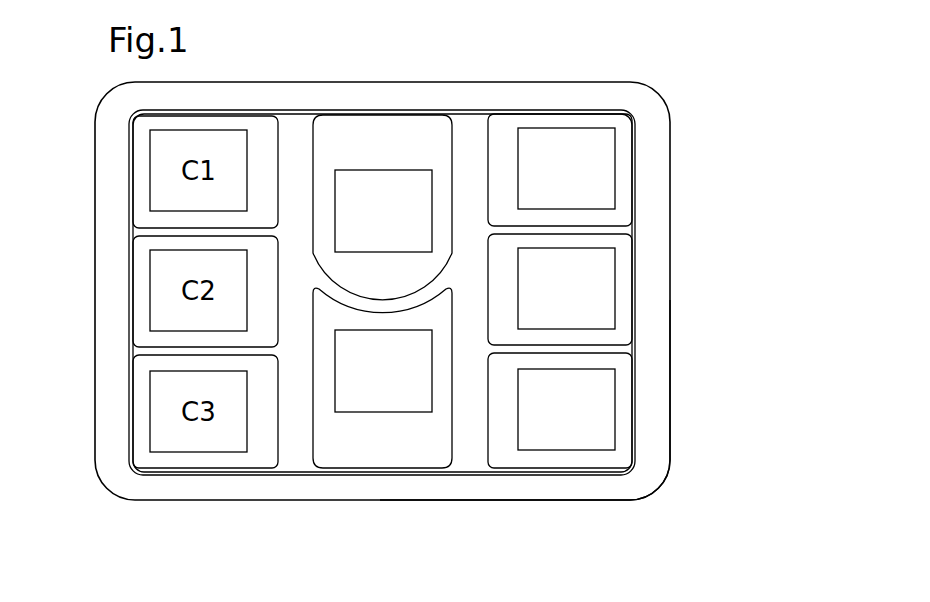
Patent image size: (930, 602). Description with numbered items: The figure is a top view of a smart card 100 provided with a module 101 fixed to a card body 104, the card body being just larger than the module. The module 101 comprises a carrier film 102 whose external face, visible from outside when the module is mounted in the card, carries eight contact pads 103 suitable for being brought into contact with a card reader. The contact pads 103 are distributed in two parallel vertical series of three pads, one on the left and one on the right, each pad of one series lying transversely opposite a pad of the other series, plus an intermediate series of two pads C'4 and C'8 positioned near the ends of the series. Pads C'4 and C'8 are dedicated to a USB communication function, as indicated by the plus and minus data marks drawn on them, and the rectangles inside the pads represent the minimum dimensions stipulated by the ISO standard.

The smart card 100 is at (628, 46).
The module 101 is at (128, 232).
The carrier film 102 is at (467, 473).
The contact pads 103 is at (632, 182).
The card body 104 is at (652, 448).
The contact pad C'4 is at (382, 162).
The contact pad C'8 is at (382, 431).